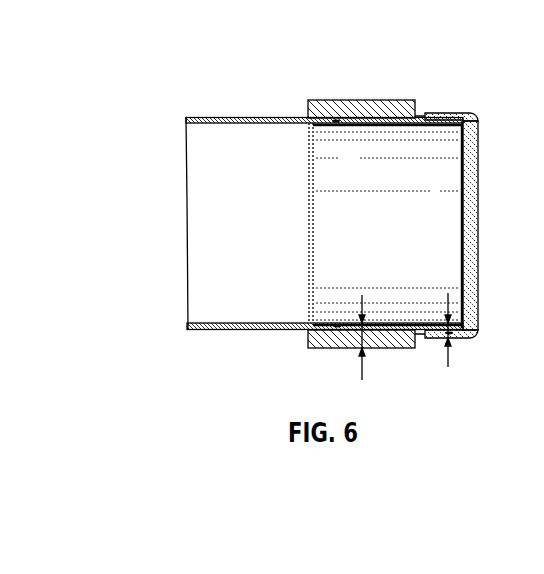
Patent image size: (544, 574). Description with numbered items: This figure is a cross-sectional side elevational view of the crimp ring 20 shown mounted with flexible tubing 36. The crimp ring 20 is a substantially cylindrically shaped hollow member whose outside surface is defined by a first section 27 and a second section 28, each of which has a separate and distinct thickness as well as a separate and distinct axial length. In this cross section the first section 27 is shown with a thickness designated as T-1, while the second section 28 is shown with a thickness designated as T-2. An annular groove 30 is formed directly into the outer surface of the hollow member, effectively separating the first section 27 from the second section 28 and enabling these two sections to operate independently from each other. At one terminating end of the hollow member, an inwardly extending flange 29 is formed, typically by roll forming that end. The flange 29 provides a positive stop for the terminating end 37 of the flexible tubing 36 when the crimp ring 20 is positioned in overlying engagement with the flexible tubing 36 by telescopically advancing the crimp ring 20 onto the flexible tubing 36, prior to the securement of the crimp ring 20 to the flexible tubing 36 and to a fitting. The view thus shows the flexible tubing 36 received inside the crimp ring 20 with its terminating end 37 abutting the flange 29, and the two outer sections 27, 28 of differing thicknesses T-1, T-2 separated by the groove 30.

The crimp ring 20 is at (480, 59).
The first section 27 is at (363, 103).
The second section 28 is at (445, 116).
The inwardly extending flange 29 is at (479, 131).
The annular groove 30 is at (420, 116).
The flexible tubing 36 is at (276, 117).
The terminating end 37 is at (461, 125).
The thickness T-1 is at (364, 337).
The thickness T-2 is at (465, 337).